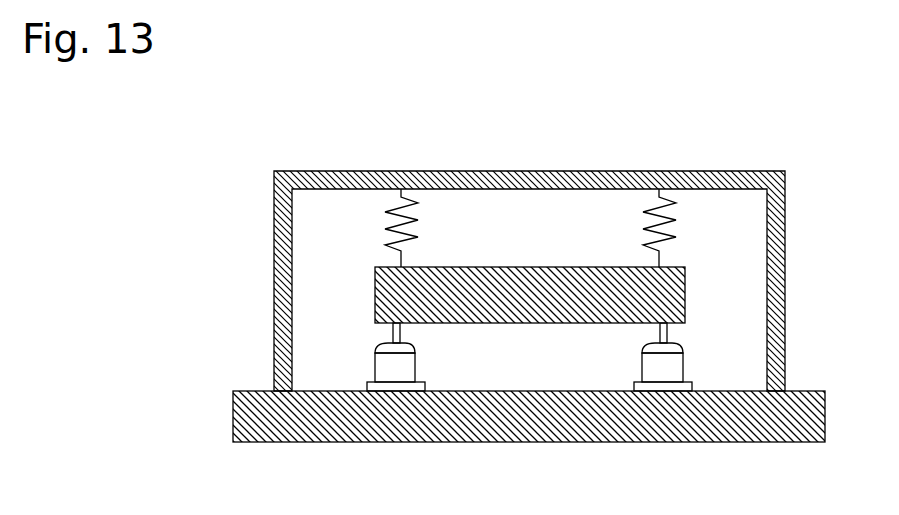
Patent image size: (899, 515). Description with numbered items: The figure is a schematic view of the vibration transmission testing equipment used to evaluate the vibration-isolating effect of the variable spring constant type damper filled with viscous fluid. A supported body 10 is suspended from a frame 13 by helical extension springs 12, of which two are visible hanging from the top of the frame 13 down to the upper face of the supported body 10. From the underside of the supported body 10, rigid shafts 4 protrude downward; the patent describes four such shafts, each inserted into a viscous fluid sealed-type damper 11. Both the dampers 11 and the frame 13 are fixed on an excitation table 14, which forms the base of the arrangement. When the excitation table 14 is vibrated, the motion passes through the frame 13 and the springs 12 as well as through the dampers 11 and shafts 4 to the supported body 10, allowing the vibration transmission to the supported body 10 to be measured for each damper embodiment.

The frame 13 is at (573, 172).
The spring 12 is at (417, 233).
The supported body 10 is at (663, 290).
The shaft 4 is at (672, 341).
The viscous fluid sealed-type damper 11 is at (660, 375).
The excitation table 14 is at (535, 442).